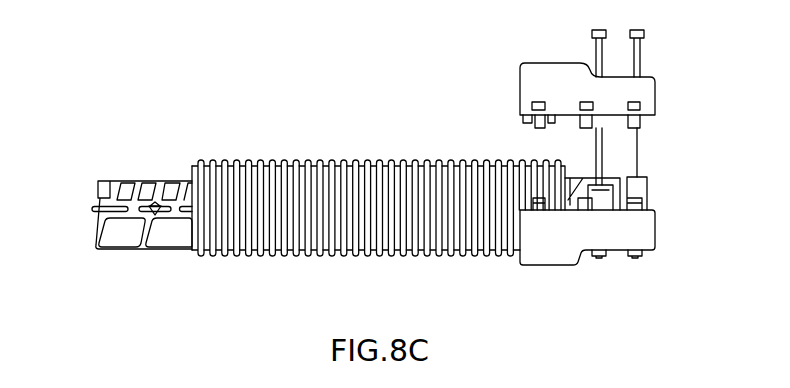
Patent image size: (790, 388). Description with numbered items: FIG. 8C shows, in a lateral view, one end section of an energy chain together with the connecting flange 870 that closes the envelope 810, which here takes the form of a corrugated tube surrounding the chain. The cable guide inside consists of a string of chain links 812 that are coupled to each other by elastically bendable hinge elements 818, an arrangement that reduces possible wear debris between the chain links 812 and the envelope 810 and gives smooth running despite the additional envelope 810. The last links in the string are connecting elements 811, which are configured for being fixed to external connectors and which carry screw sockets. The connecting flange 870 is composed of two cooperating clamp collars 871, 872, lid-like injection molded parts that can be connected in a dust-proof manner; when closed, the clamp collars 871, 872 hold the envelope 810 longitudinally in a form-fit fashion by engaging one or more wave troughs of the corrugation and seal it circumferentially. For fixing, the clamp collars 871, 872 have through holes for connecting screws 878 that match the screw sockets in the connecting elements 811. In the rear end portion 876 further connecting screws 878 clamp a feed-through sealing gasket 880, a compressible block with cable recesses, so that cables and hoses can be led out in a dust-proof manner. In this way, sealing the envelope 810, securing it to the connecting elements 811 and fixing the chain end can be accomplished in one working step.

The envelope 810 is at (338, 176).
The chain links 812 is at (117, 185).
The hinge elements 818 is at (97, 209).
The connecting flange 870 is at (622, 181).
The clamp collar 871 is at (645, 98).
The clamp collar 872 is at (637, 230).
The rear end portion 876 is at (610, 273).
The connecting screws 878 is at (639, 55).
The connecting elements 811 is at (603, 182).
The feed-through sealing gasket 880 is at (641, 188).